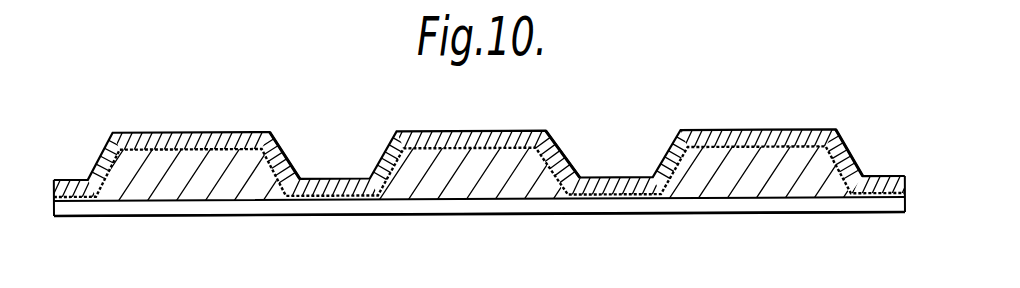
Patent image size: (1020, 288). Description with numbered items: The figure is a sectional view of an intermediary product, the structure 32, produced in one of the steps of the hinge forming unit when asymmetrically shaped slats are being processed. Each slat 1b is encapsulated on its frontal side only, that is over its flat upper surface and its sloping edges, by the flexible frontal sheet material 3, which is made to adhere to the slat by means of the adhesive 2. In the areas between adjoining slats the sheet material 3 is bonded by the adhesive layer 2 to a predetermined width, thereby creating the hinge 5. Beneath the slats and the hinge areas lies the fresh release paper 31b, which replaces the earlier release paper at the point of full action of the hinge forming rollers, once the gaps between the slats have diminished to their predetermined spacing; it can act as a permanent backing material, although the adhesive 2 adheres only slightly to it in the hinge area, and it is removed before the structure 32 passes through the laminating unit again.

The slat 1b is at (182, 188).
The adhesive 2 is at (345, 202).
The flexible frontal sheet material 3 is at (274, 152).
The hinge 5 is at (618, 150).
The release paper 31b is at (781, 200).
The structure 32 is at (848, 111).